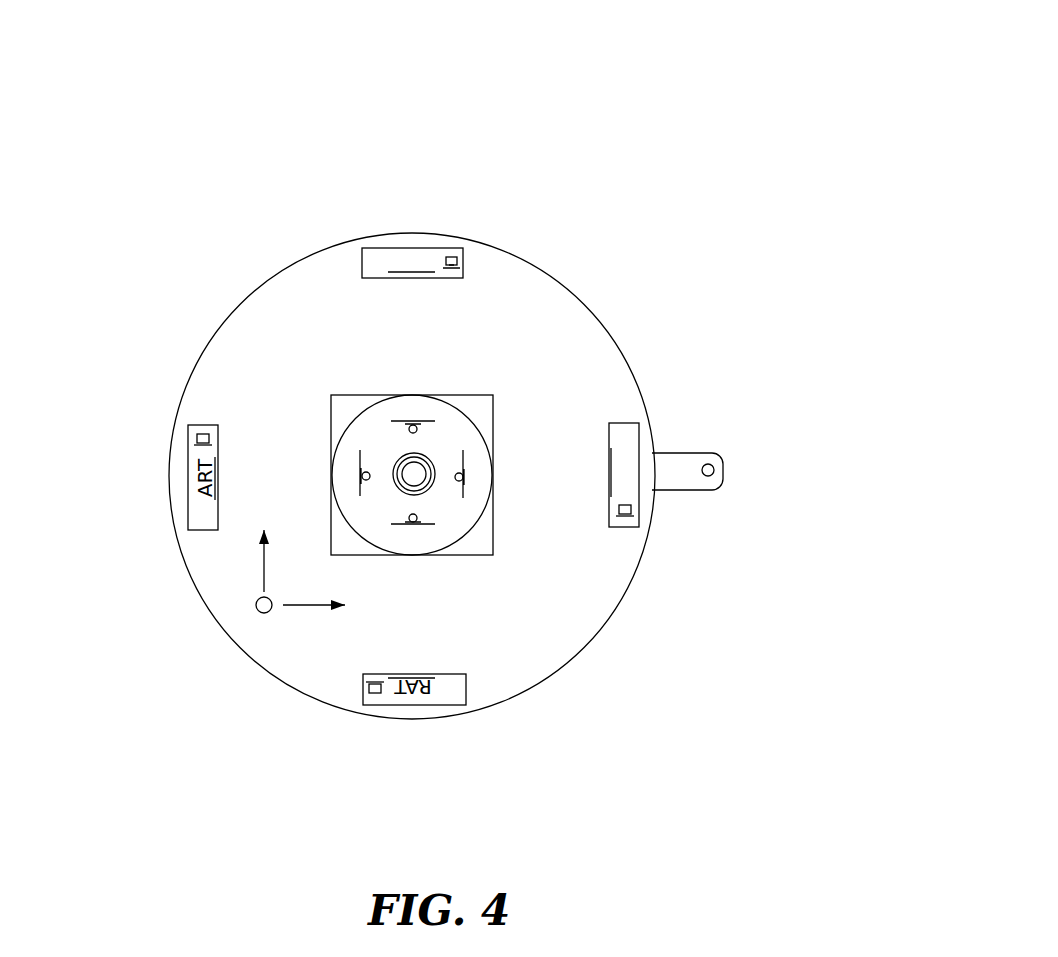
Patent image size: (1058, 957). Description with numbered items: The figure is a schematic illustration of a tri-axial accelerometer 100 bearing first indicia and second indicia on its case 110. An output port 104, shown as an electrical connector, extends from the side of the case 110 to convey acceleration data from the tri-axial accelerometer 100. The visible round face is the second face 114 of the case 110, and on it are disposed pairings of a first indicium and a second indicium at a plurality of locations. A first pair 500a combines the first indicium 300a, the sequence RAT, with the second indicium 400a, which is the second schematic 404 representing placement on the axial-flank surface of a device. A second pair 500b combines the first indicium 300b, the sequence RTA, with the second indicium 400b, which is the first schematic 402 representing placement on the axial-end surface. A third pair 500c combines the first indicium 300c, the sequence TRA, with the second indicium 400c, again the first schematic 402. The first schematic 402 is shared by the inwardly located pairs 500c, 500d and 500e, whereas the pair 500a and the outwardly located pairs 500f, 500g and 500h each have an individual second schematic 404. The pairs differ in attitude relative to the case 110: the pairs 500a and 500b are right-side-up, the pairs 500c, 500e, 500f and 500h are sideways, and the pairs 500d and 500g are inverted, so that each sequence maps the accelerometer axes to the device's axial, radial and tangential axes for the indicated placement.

The tri-axial accelerometer 100 is at (754, 137).
The output port 104 is at (705, 449).
The case 110 is at (643, 385).
The second face 114 is at (598, 352).
The first indicium 300a is at (412, 248).
The first indicium 300b is at (420, 395).
The first indicium 300c is at (492, 475).
The second indicium 400a is at (452, 255).
The second indicium 400b is at (448, 398).
The second indicium 400c is at (478, 525).
The first schematic 402 is at (488, 397).
The second schematic 404 is at (627, 516).
The first pair 500a is at (383, 244).
The second pair 500b is at (713, 203).
The third pair 500c is at (690, 737).
The pair 500d is at (405, 558).
The pair 500e is at (330, 458).
The pair 500f is at (171, 477).
The pair 500g is at (420, 716).
The pair 500h is at (647, 499).